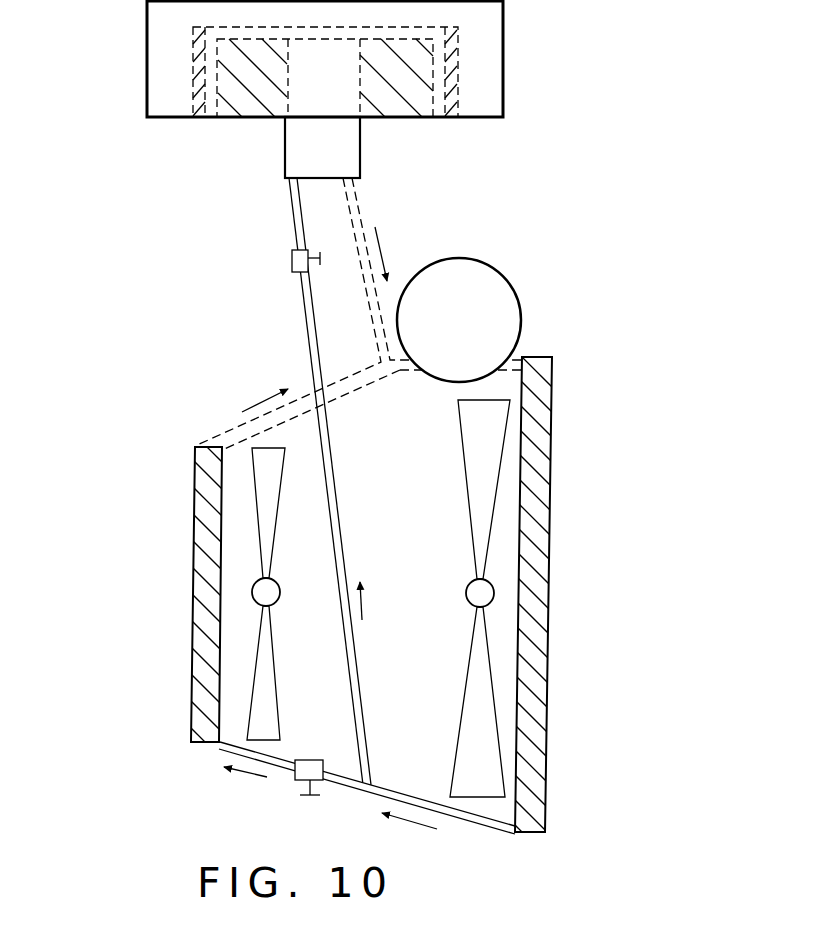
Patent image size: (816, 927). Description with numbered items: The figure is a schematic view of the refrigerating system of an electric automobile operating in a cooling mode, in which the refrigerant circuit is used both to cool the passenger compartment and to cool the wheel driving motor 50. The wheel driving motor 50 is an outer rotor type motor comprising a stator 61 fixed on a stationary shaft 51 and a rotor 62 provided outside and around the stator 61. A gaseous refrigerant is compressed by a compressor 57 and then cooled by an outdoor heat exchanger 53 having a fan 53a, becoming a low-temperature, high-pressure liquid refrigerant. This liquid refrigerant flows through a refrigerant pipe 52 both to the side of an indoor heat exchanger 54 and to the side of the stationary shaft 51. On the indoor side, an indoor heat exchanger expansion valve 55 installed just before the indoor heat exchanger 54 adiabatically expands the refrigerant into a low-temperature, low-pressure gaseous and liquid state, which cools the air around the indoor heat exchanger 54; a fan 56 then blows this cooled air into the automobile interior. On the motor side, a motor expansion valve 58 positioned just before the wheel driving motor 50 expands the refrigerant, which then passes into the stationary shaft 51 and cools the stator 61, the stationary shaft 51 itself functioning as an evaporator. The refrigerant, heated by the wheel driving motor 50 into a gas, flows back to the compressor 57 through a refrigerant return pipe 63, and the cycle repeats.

The wheel driving motor 50 is at (138, 44).
The stationary shaft 51 is at (347, 152).
The refrigerant pipe 52 is at (443, 817).
The outdoor heat exchanger 53 is at (543, 540).
The fan 53a is at (467, 723).
The indoor heat exchanger 54 is at (200, 497).
The indoor heat exchanger expansion valve 55 is at (297, 782).
The fan 56 is at (268, 716).
The compressor 57 is at (503, 297).
The motor expansion valve 58 is at (292, 260).
The stator 61 is at (420, 60).
The rotor 62 is at (450, 97).
The refrigerant return pipe 63 is at (407, 372).